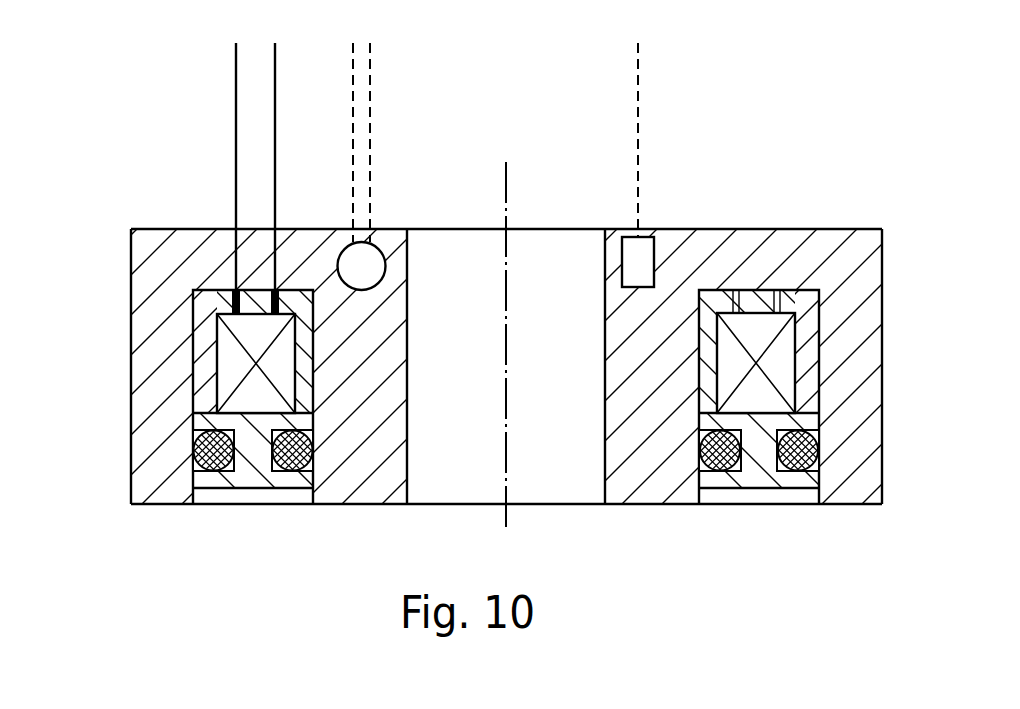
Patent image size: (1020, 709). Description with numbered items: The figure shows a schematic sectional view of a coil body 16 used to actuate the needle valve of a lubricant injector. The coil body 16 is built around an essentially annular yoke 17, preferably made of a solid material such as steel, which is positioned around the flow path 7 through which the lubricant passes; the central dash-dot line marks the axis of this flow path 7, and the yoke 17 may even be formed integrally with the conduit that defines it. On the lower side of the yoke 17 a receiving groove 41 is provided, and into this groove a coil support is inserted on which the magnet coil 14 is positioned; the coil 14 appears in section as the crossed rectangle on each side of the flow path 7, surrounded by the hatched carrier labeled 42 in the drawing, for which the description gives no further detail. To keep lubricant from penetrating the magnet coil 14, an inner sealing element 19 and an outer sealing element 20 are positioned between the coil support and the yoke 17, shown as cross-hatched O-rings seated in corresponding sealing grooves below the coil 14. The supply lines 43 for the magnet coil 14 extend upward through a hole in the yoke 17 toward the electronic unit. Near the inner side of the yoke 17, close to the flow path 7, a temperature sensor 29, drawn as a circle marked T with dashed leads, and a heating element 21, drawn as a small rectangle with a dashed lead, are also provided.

The flow path 7 is at (507, 191).
The magnet coil 14 is at (235, 374).
The coil body 16 is at (510, 319).
The yoke 17 is at (756, 264).
The inner sealing element 19 is at (291, 467).
The outer sealing element 20 is at (197, 452).
The heating element 21 is at (657, 263).
The temperature sensor 29 is at (369, 168).
The receiving groove 41 is at (822, 352).
The coil carrier 42 is at (207, 333).
The supply lines 43 is at (236, 95).